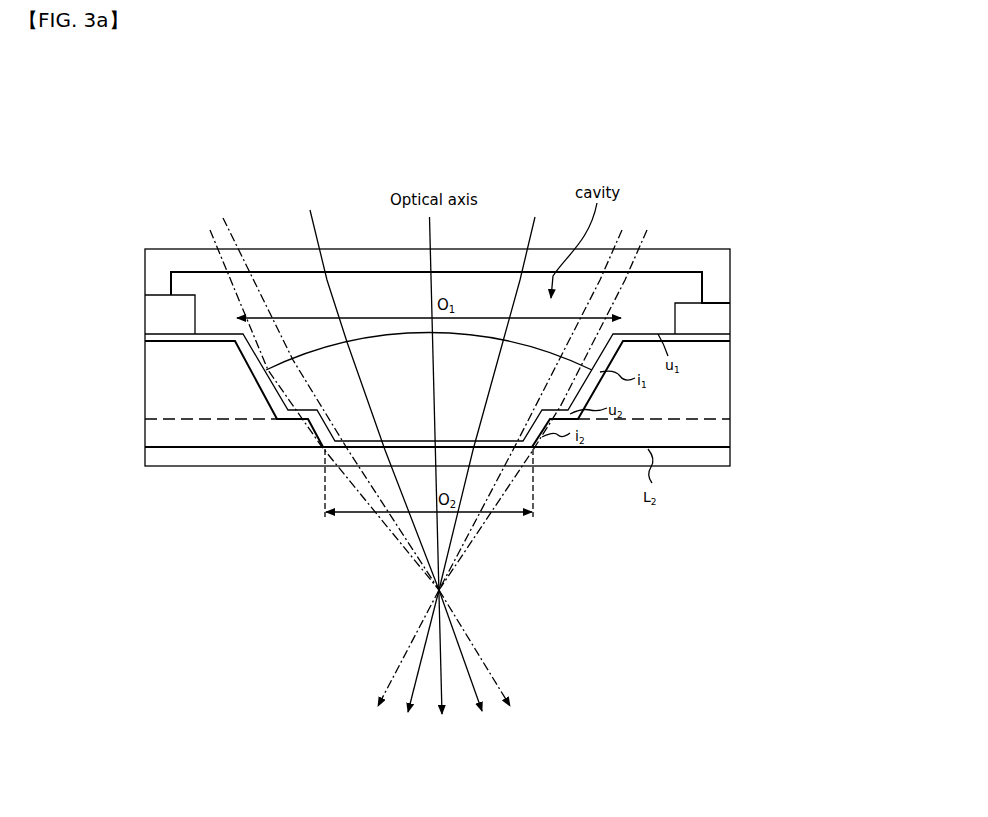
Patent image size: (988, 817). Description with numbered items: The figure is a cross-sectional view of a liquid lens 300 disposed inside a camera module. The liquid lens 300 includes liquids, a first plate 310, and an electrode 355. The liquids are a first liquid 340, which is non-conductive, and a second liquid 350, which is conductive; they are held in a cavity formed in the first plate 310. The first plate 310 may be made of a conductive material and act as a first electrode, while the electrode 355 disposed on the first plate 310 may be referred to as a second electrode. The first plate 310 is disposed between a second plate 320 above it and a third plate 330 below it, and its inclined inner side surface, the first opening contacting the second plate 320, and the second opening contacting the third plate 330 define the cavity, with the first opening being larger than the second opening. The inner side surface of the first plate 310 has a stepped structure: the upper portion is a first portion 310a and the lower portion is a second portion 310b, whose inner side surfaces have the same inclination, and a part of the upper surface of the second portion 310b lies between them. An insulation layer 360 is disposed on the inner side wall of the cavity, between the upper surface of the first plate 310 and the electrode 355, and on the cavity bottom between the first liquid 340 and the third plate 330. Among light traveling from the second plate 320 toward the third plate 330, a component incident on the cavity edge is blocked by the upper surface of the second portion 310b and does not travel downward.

The liquid lens 300 is at (714, 175).
The first plate 310 is at (494, 407).
The first portion 310a is at (723, 385).
The second portion 310b is at (723, 433).
The second plate 320 is at (722, 263).
The third plate 330 is at (722, 455).
The first liquid 340 is at (387, 356).
The second liquid 350 is at (484, 285).
The electrode 355 is at (722, 319).
The insulation layer 360 is at (722, 340).